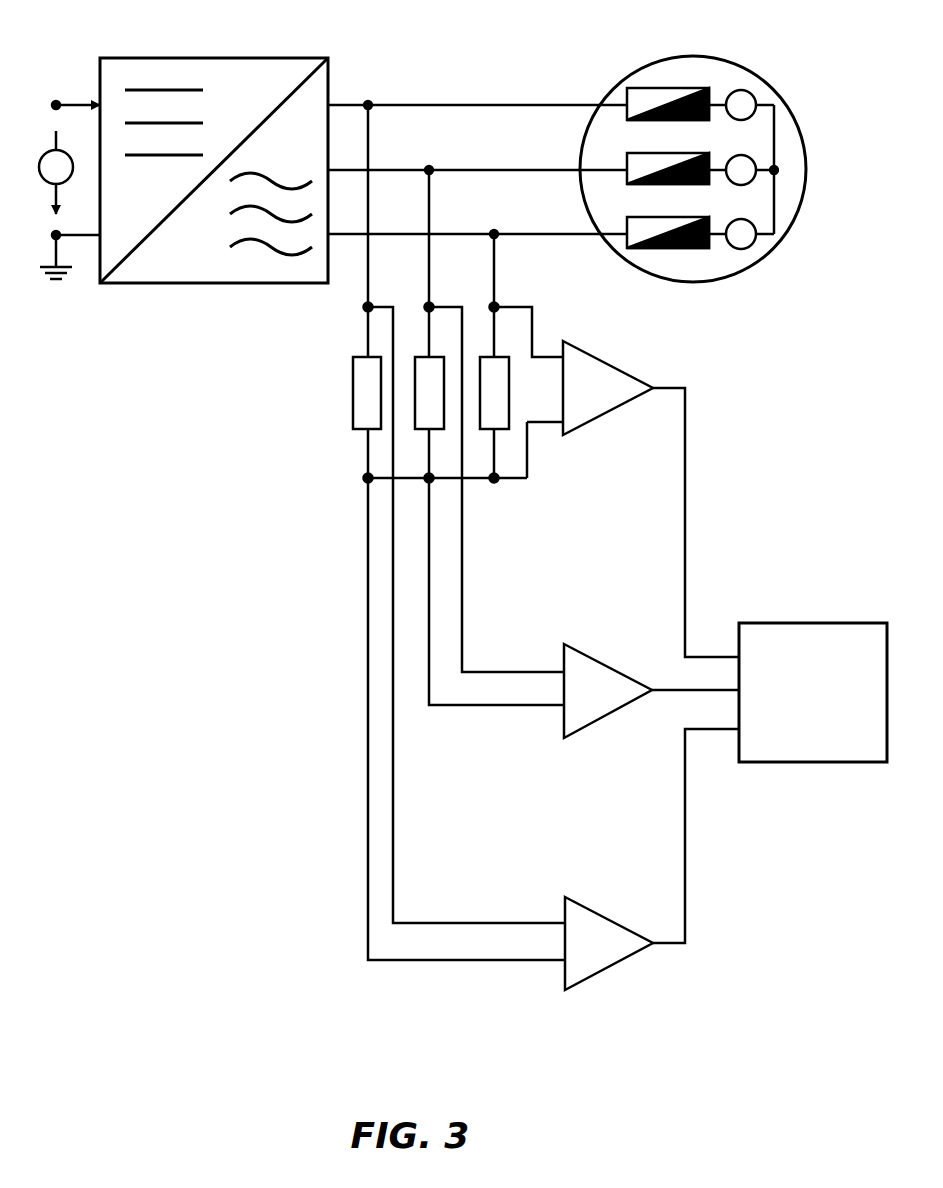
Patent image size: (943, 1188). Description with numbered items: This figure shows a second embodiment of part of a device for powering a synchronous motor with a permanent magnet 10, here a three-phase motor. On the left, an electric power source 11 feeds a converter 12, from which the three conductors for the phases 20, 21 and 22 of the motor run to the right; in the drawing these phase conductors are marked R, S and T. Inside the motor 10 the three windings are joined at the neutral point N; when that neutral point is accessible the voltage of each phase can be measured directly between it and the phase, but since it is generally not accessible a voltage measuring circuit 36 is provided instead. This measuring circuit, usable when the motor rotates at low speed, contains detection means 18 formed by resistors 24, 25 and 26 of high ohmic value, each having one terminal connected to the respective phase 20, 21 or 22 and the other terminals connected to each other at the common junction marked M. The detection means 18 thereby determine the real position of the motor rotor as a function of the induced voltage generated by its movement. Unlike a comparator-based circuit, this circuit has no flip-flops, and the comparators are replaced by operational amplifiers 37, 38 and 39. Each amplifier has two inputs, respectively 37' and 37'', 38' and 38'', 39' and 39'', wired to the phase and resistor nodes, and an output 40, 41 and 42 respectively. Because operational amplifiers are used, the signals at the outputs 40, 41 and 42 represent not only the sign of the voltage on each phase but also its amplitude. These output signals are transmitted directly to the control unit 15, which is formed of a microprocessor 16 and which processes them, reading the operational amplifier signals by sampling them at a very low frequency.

The synchronous motor with a permanent magnet 10 is at (757, 74).
The electric power source 11 is at (43, 192).
The converter 12 is at (175, 253).
The control unit 15 is at (788, 765).
The microprocessor 16 is at (785, 642).
The detection means 18 is at (327, 430).
The phase 20 is at (432, 105).
The phase 21 is at (498, 170).
The phase 22 is at (530, 234).
The resistor 24 is at (370, 372).
The resistor 25 is at (430, 372).
The resistor 26 is at (490, 368).
The voltage measuring circuit 36 is at (357, 518).
The operational amplifier 37 is at (609, 910).
The input of operational amplifier 37' is at (466, 615).
The input of operational amplifier 37'' is at (466, 766).
The operational amplifier 38 is at (608, 664).
The input of operational amplifier 38' is at (498, 489).
The input of operational amplifier 38'' is at (500, 629).
The operational amplifier 39 is at (608, 373).
The input of operational amplifier 39' is at (550, 318).
The input of operational amplifier 39'' is at (567, 451).
The output of operational amplifier 40 is at (667, 945).
The output of operational amplifier 41 is at (672, 695).
The output of operational amplifier 42 is at (668, 385).
The artificial star point M is at (493, 485).
The neutral point N is at (777, 169).
The phase R node R is at (367, 93).
The phase S node S is at (429, 156).
The phase T node T is at (494, 222).